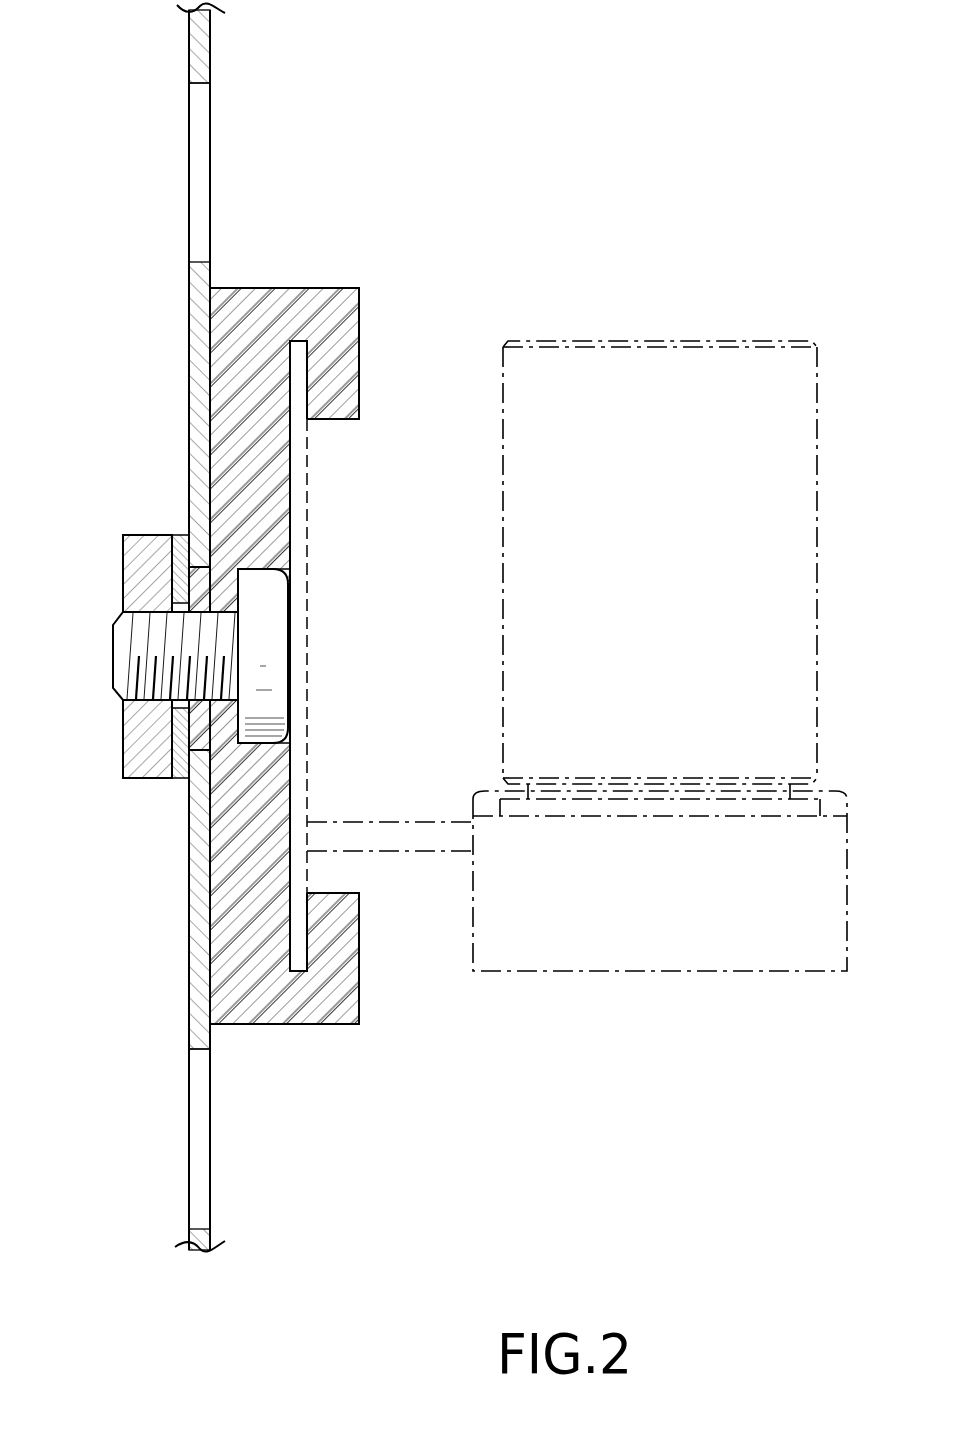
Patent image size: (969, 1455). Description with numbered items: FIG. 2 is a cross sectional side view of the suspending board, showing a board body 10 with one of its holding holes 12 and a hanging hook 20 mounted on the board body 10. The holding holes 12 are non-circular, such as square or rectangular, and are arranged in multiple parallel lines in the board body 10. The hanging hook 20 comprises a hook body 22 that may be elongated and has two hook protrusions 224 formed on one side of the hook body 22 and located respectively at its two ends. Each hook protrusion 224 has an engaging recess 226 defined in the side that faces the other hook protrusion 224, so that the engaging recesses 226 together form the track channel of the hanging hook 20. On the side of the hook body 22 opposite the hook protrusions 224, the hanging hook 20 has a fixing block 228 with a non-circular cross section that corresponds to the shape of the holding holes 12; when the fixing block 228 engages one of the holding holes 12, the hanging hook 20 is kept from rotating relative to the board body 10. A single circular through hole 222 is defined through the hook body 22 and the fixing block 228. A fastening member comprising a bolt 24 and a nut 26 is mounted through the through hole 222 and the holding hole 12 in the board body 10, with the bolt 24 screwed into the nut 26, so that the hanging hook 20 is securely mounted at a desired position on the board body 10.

The board body 10 is at (236, 56).
The holding hole 12 is at (200, 261).
The hanging hook 20 is at (402, 296).
The hook body 22 is at (292, 485).
The bolt 24 is at (262, 698).
The nut 26 is at (145, 575).
The through hole 222 is at (232, 613).
The hook protrusion 224 is at (343, 370).
The engaging recess 226 is at (300, 368).
The fixing block 228 is at (200, 730).